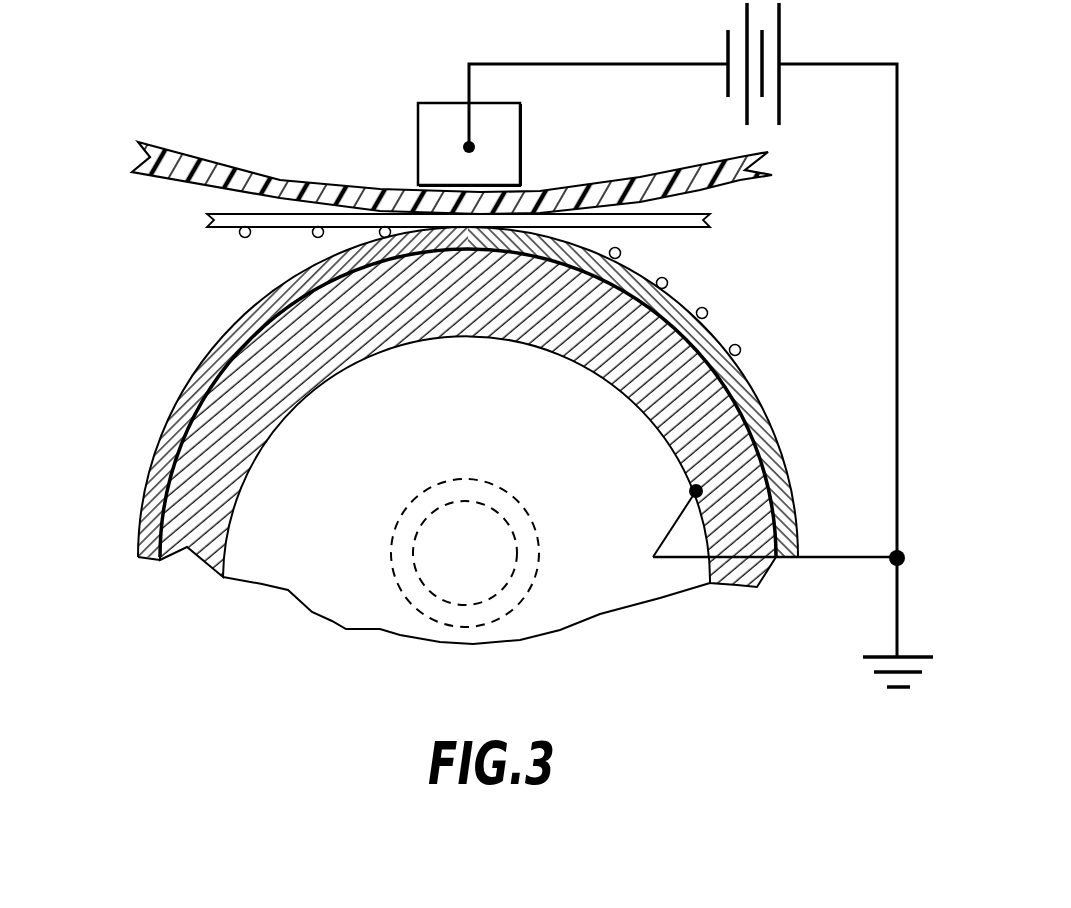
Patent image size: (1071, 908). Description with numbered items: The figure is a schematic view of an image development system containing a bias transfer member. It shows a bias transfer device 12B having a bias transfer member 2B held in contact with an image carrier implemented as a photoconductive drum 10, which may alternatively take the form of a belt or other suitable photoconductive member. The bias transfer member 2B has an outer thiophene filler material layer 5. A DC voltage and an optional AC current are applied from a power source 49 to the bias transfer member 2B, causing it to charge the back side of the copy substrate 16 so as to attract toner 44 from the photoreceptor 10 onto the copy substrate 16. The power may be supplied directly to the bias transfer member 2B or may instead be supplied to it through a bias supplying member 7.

The bias transfer member 2B is at (100, 117).
The bias transfer device 12B is at (291, 99).
The outer thiophene filler material layer 5 is at (187, 156).
The bias supplying member 7 is at (428, 141).
The copy substrate 16 is at (711, 219).
The toner 44 is at (314, 236).
The power source 49 is at (645, 60).
The photoconductive drum 10 is at (786, 352).